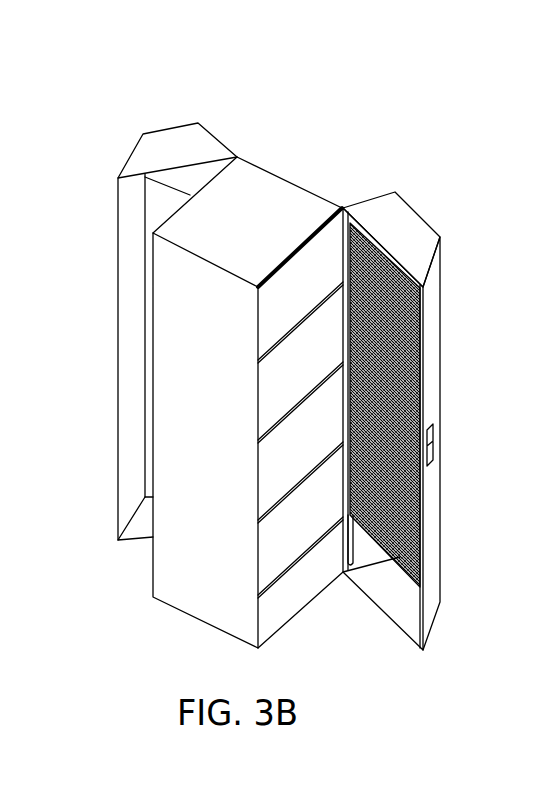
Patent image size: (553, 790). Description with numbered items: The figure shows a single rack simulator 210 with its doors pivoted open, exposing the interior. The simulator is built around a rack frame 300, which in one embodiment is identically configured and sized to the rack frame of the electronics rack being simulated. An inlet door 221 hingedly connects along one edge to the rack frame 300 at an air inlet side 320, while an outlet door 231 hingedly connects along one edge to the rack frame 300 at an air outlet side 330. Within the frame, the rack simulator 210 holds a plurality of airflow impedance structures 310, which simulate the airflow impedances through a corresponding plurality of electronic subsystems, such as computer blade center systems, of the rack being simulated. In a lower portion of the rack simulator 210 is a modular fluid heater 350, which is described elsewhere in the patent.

The rack frame 300 is at (293, 172).
The rack simulator 210 is at (252, 182).
The air inlet side 320 is at (308, 237).
The modular fluid heater 350 is at (298, 593).
The airflow impedance structures 310 is at (268, 308).
The inlet door 221 is at (420, 233).
The outlet door 231 is at (177, 145).
The air outlet side 330 is at (145, 180).